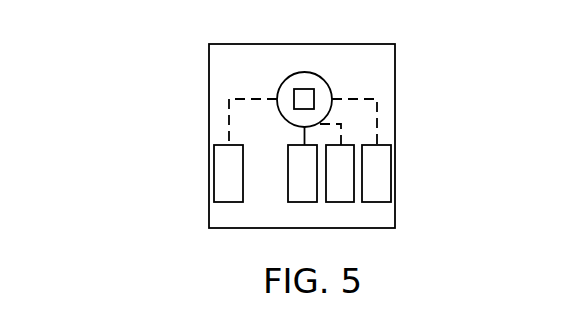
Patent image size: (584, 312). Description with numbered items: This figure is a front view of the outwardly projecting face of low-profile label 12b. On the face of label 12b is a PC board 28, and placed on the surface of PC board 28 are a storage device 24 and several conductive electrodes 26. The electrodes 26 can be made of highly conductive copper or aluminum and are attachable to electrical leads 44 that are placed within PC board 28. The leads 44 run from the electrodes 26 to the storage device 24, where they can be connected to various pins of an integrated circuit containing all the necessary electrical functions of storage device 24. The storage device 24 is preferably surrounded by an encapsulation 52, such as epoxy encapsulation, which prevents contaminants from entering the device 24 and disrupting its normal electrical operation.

The low-profile label 12b is at (94, 133).
The PC board 28 is at (395, 127).
The encapsulation 52 is at (286, 77).
The storage device 24 is at (304, 89).
The electrical leads 44 is at (363, 97).
The conductive electrodes 26 is at (377, 195).